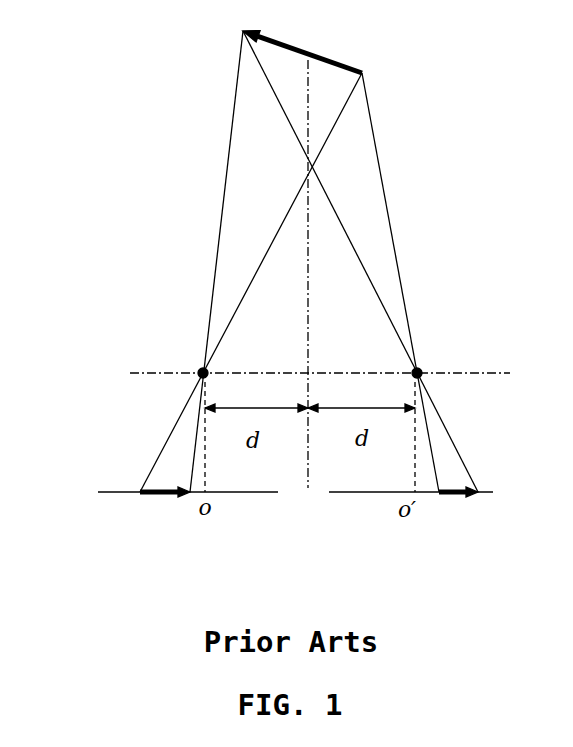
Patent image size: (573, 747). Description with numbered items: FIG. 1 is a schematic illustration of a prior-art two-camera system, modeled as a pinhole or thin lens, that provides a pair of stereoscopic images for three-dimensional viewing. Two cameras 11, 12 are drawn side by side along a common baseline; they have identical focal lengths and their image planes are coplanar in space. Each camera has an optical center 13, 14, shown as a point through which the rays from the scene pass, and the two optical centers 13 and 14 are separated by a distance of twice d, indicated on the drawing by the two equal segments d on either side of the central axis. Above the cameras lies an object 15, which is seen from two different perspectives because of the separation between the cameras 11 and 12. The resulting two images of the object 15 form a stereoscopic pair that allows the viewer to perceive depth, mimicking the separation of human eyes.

The camera 11 is at (123, 493).
The camera 12 is at (380, 490).
The optical center 13 is at (203, 373).
The optical center 14 is at (417, 373).
The object 15 is at (330, 58).